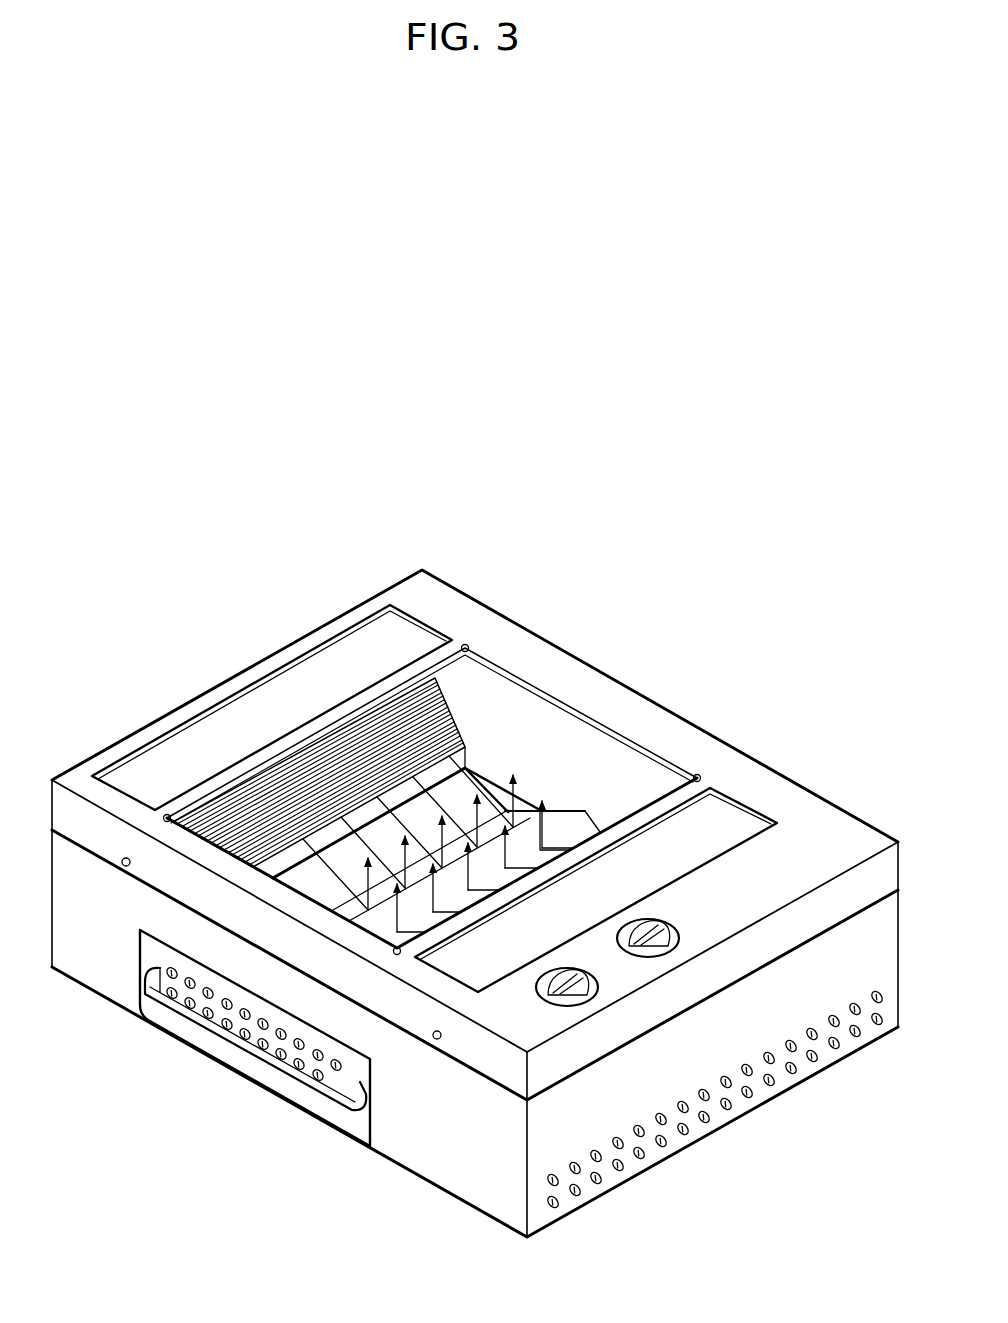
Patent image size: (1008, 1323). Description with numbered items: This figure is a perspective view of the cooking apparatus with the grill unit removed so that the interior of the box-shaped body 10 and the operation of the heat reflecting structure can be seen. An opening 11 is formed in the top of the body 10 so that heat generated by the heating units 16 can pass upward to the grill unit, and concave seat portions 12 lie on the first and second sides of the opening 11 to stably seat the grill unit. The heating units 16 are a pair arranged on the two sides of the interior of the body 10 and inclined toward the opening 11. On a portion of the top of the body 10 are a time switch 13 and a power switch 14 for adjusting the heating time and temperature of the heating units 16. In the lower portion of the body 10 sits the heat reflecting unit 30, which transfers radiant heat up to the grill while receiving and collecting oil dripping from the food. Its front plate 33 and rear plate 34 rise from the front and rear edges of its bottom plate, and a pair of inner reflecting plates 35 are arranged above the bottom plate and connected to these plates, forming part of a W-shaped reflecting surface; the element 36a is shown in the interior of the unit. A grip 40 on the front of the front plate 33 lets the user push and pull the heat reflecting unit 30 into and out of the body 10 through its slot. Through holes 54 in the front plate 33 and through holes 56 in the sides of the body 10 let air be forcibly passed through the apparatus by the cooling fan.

The body 10 is at (838, 777).
The opening 11 is at (618, 743).
The concave seat portions 12 is at (343, 653).
The time switch 13 is at (577, 995).
The power switch 14 is at (672, 950).
The heating units 16 is at (237, 805).
The heat reflecting unit 30 is at (204, 1057).
The front plate 33 is at (350, 1118).
The rear plate 34 is at (500, 811).
The inner reflecting plates 35 is at (586, 826).
The heating bar 36a is at (297, 874).
The grip 40 is at (218, 1055).
The through holes 54 is at (282, 1058).
The through holes 56 is at (770, 1084).